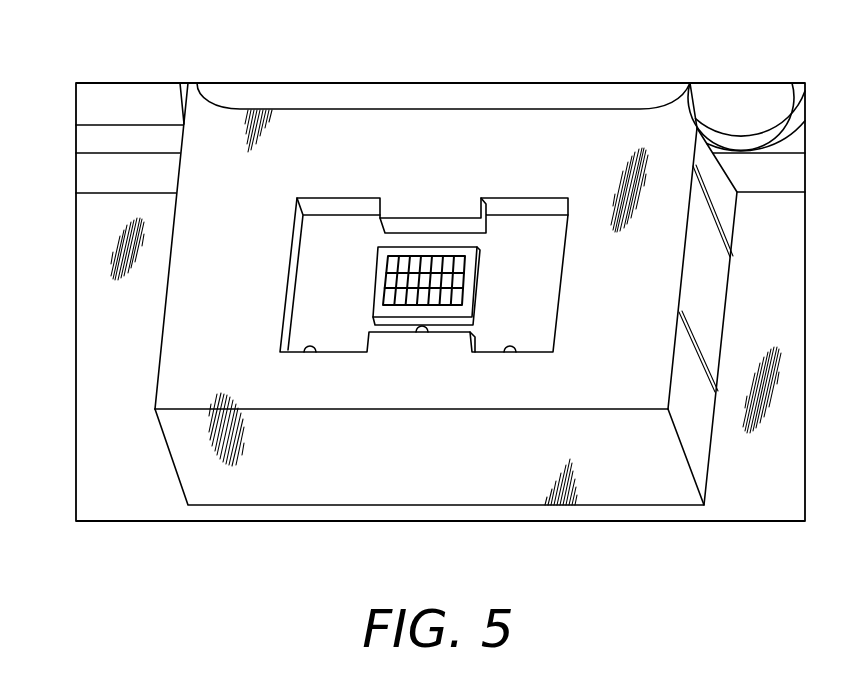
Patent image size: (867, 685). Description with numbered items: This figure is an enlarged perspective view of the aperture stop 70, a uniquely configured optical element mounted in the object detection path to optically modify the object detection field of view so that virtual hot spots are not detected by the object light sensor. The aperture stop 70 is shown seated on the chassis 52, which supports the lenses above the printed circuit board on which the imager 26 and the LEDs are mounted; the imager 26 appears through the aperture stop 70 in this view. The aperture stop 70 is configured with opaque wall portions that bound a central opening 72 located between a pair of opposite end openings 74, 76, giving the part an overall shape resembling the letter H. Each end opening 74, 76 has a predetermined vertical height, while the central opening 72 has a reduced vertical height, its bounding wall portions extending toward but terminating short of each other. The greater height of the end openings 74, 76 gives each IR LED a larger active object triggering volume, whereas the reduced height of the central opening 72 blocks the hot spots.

The imager 26 is at (447, 268).
The chassis 52 is at (93, 170).
The aperture stop 70 is at (558, 316).
The central opening 72 is at (427, 333).
The end opening 74 is at (316, 353).
The end opening 76 is at (504, 353).